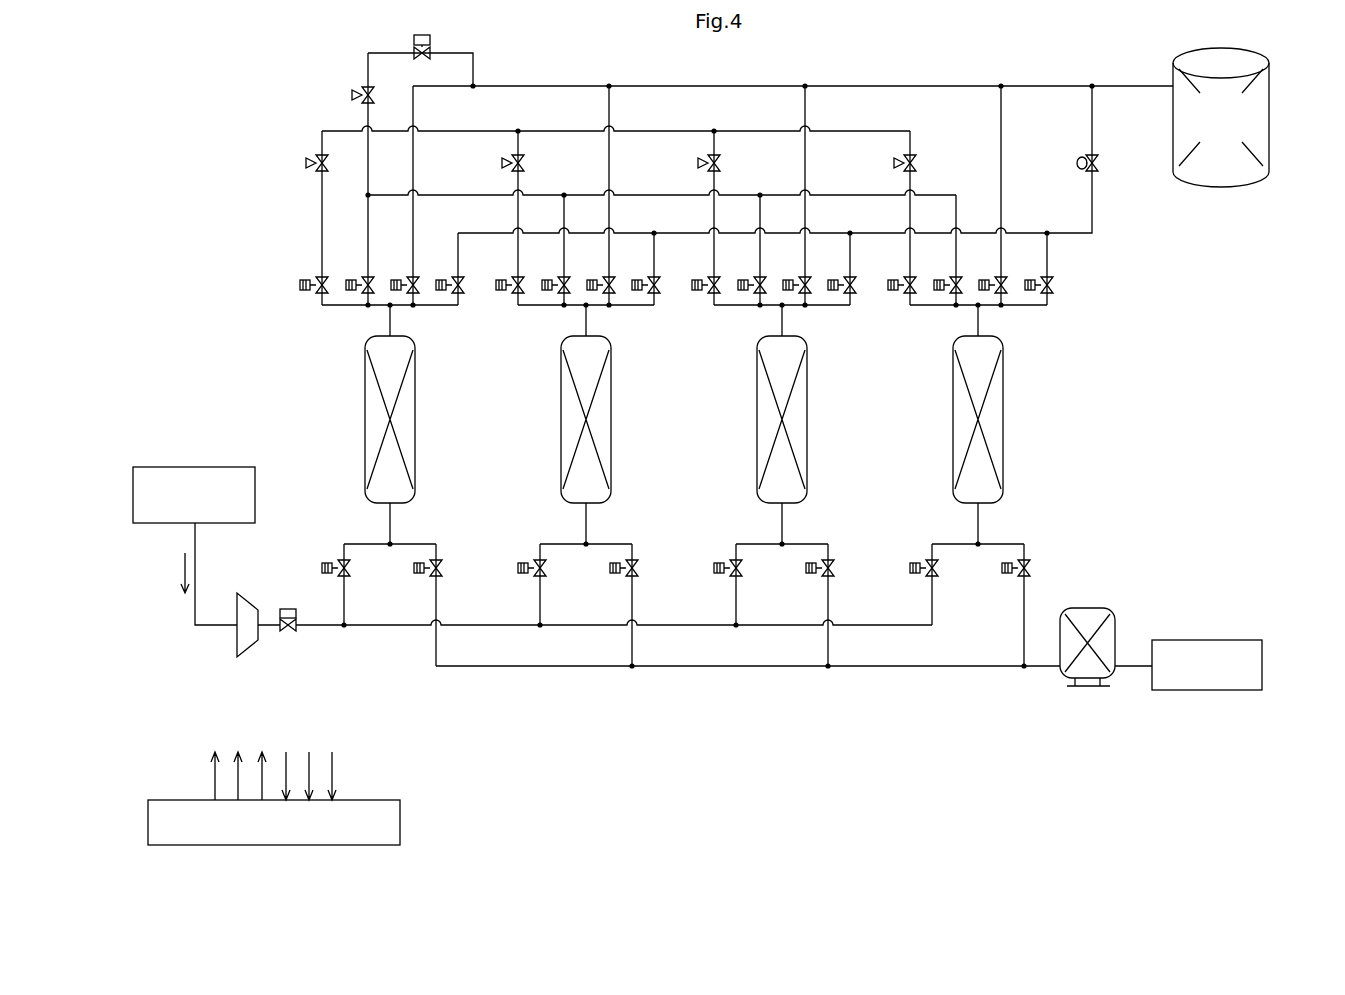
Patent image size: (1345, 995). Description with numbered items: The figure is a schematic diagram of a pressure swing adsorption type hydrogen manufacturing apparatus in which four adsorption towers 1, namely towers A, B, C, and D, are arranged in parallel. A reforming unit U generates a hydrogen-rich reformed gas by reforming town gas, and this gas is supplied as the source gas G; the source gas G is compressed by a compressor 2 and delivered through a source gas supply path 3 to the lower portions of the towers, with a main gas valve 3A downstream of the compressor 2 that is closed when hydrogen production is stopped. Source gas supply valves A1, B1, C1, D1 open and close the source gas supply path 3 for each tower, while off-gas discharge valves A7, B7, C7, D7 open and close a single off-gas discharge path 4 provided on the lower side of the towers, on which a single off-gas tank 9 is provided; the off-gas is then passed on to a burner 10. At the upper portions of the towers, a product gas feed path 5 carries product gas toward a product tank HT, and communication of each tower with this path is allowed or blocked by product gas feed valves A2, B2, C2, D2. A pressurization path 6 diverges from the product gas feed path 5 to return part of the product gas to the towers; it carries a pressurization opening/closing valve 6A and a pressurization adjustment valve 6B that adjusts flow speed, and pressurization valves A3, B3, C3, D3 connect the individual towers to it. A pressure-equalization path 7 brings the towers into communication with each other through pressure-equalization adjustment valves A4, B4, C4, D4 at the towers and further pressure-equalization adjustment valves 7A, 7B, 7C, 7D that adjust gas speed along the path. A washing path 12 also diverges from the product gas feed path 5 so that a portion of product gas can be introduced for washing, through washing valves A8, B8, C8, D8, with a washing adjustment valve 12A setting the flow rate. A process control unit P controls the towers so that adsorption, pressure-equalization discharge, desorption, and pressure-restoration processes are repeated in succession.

The adsorption tower 1 is at (668, 419).
The tower A is at (365, 420).
The tower B is at (561, 420).
The tower C is at (757, 420).
The tower D is at (953, 420).
The compressor 2 is at (237, 660).
The source gas supply path 3 is at (318, 627).
The main gas valve 3A is at (286, 609).
The off-gas discharge path 4 is at (494, 668).
The product gas feed path 5 is at (733, 85).
The pressurization path 6 is at (368, 63).
The pressurization opening/closing valve 6A is at (432, 40).
The pressurization adjustment valve 6B is at (354, 96).
The pressure-equalization path 7 is at (755, 130).
The pressure-equalization adjustment valve 7A is at (306, 165).
The pressure-equalization adjustment valve 7B is at (526, 165).
The pressure-equalization adjustment valve 7C is at (722, 165).
The pressure-equalization adjustment valve 7D is at (918, 165).
The off-gas tank 9 is at (1105, 619).
The burner 10 is at (1213, 645).
The washing path 12 is at (1094, 236).
The washing adjustment valve 12A is at (1099, 166).
The product tank HT is at (1266, 82).
The reforming unit U is at (196, 467).
The source gas G is at (183, 580).
The process control unit P is at (205, 840).
The source gas supply valve A1 is at (350, 574).
The product gas feed valve A2 is at (421, 283).
The pressurization valve A3 is at (376, 283).
The pressure-equalization adjustment valve A4 is at (330, 283).
The off-gas discharge valve A7 is at (442, 574).
The washing valve A8 is at (466, 283).
The source gas supply valve B1 is at (546, 574).
The product gas feed valve B2 is at (617, 283).
The pressurization valve B3 is at (572, 283).
The pressure-equalization adjustment valve B4 is at (526, 283).
The off-gas discharge valve B7 is at (638, 574).
The washing valve B8 is at (662, 283).
The source gas supply valve C1 is at (742, 574).
The product gas feed valve C2 is at (813, 283).
The pressurization valve C3 is at (768, 283).
The pressure-equalization adjustment valve C4 is at (722, 283).
The off-gas discharge valve C7 is at (834, 574).
The washing valve C8 is at (858, 283).
The source gas supply valve D1 is at (938, 574).
The product gas feed valve D2 is at (1009, 283).
The pressurization valve D3 is at (964, 283).
The pressure-equalization adjustment valve D4 is at (918, 283).
The off-gas discharge valve D7 is at (1030, 574).
The washing valve D8 is at (1055, 283).